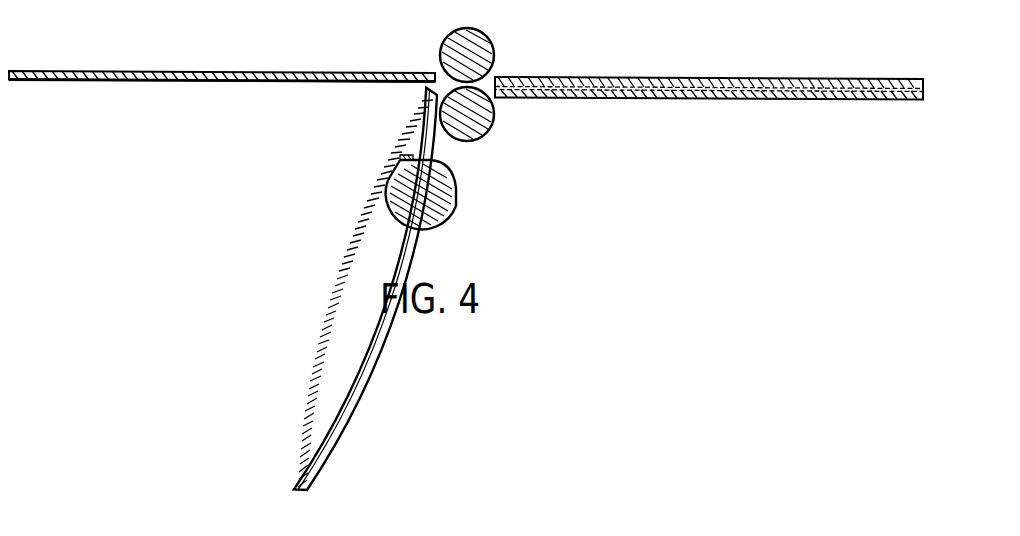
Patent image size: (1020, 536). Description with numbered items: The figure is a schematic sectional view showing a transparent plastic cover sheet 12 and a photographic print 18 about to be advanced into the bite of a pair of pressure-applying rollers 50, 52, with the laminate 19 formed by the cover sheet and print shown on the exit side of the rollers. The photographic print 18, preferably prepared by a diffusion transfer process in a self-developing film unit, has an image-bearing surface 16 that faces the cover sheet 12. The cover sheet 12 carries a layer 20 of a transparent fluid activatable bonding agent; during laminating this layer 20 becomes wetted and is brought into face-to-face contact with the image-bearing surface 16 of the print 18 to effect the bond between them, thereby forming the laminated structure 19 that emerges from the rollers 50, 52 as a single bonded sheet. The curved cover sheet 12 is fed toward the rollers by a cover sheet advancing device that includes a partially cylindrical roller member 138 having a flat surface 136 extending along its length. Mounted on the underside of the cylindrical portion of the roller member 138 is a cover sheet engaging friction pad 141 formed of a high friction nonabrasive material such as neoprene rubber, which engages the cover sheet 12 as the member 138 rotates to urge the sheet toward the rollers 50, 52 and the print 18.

The transparent plastic cover sheet 12 is at (608, 259).
The image-bearing surface 16 is at (178, 81).
The photographic print 18 is at (466, 254).
The laminate 19 is at (823, 78).
The layer of transparent fluid activatable bonding agent 20 is at (532, 88).
The pressure-applying roller 50 is at (494, 61).
The pressure-applying roller 52 is at (492, 116).
The flat surface 136 is at (441, 203).
The partially cylindrical roller member 138 is at (426, 229).
The cover sheet engaging friction pad 141 is at (405, 157).